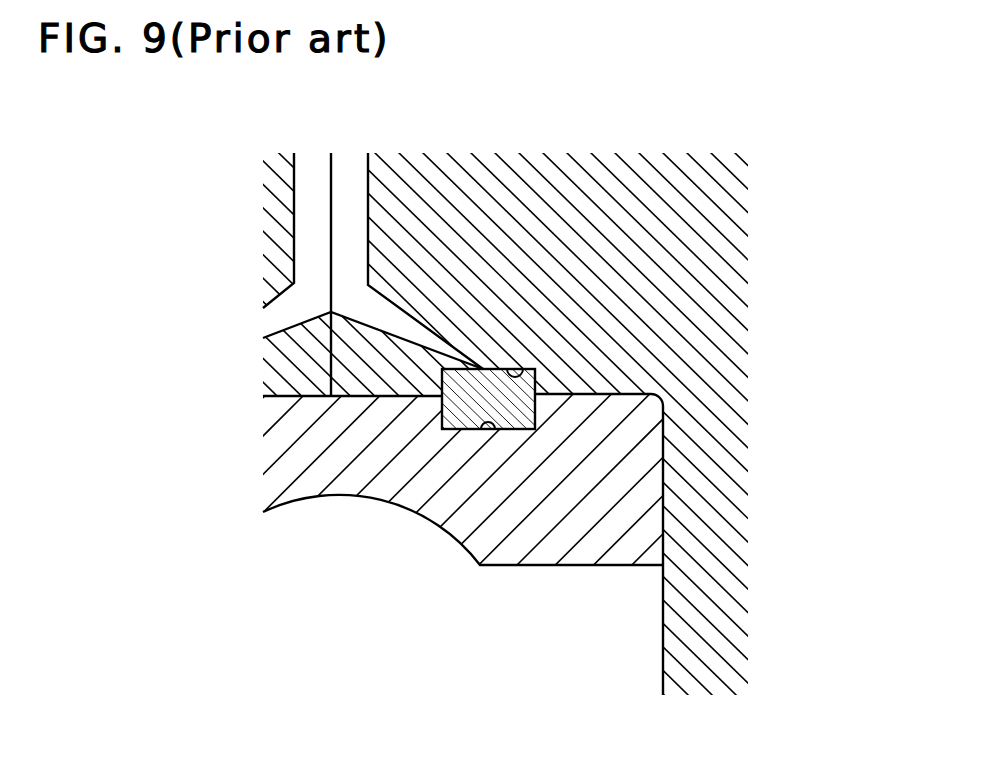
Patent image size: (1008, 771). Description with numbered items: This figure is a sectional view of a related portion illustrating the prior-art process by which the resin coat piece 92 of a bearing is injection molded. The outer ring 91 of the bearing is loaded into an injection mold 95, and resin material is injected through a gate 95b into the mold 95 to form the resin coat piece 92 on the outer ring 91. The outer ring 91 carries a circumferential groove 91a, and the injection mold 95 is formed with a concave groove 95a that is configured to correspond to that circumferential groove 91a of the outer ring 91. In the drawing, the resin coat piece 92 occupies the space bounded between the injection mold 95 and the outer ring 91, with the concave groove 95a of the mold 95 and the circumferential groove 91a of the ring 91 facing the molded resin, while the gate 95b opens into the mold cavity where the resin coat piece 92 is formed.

The outer ring 91 is at (595, 538).
The circumferential groove 91a is at (497, 428).
The resin coat piece 92 is at (460, 410).
The injection mold 95 is at (448, 213).
The concave groove 95a is at (514, 366).
The gate 95b is at (357, 213).